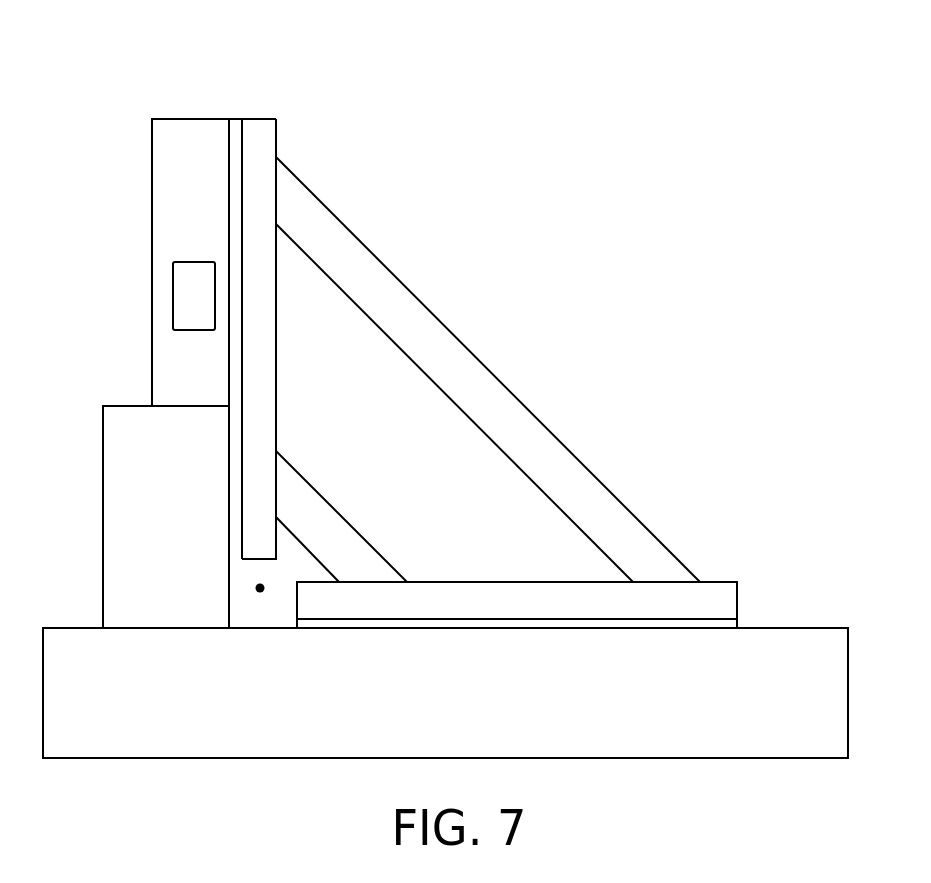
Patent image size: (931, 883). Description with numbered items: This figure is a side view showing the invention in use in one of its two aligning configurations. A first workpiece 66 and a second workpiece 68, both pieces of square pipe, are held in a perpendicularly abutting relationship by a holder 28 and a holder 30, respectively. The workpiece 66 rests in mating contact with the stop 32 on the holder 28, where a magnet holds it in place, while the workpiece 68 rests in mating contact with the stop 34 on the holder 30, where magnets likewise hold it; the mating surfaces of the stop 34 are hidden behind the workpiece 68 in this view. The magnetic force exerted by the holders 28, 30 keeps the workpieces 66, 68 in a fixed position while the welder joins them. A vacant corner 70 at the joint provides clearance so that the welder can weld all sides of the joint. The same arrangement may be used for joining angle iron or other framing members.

The holder 28 is at (277, 135).
The holder 30 is at (715, 582).
The stop 32 is at (243, 120).
The stop 34 is at (712, 619).
The workpiece 66 is at (163, 507).
The workpiece 68 is at (701, 731).
The vacant corner 70 is at (263, 584).